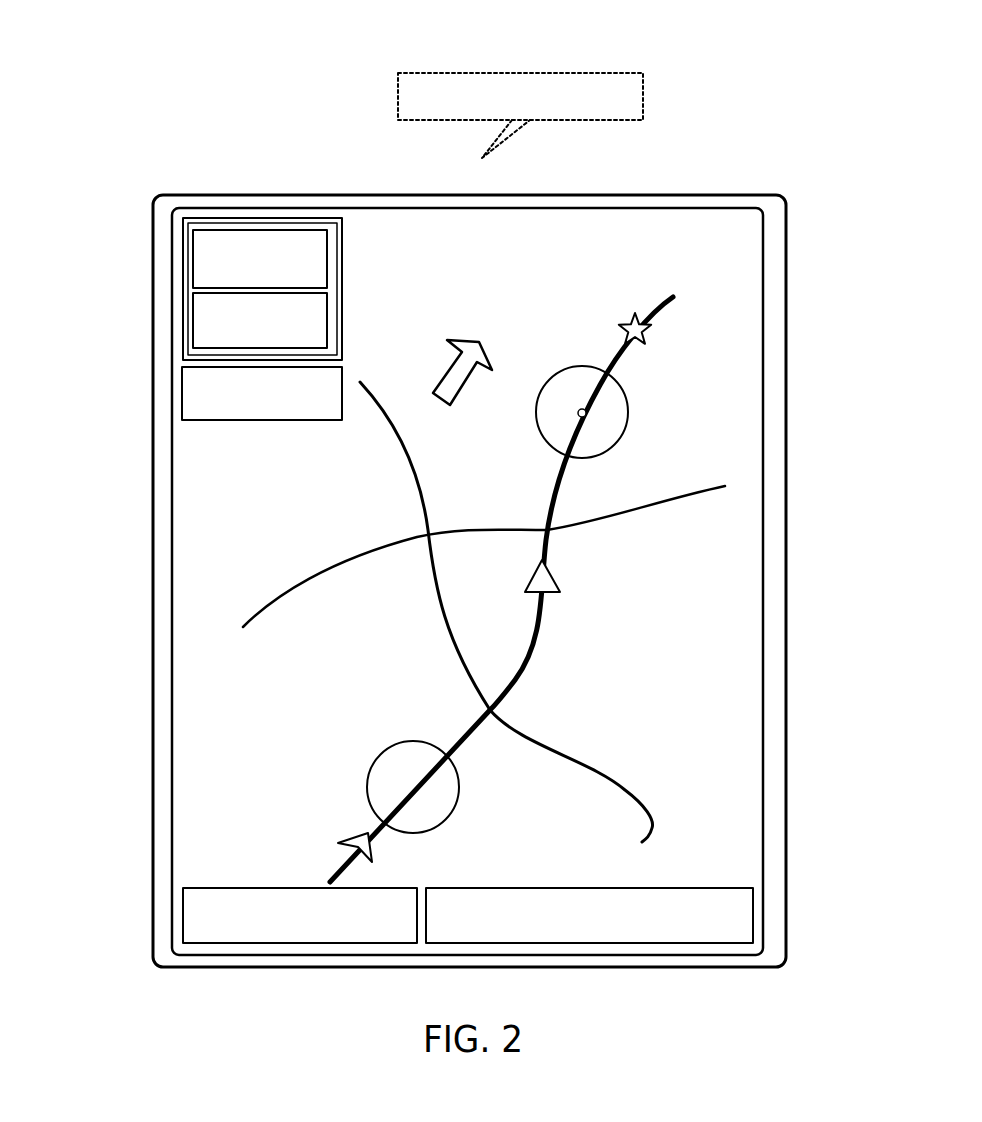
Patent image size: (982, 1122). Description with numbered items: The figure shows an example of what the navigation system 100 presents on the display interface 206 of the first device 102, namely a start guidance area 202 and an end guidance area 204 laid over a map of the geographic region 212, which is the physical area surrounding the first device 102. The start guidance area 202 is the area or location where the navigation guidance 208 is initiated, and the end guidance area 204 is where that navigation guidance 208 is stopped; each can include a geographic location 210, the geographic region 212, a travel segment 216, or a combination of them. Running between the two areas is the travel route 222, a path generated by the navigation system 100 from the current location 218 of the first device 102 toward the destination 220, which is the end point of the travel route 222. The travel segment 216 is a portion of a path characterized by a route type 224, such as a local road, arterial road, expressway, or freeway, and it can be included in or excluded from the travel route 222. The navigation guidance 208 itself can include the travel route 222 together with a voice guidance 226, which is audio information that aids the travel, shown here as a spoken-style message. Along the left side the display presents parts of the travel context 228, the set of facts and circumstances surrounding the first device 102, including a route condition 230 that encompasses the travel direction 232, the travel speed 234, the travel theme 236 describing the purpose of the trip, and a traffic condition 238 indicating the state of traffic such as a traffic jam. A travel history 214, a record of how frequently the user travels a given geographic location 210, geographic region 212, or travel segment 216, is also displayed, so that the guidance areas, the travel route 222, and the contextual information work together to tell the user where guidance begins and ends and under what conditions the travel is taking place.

The navigation system 100 is at (184, 64).
The first device 102 is at (189, 190).
The display interface 206 is at (385, 196).
The geographic region 212 is at (595, 232).
The travel segment 216 is at (284, 577).
The travel route 222 is at (523, 648).
The end guidance area 204 is at (645, 385).
The geographic location 210 is at (588, 412).
The destination 220 is at (632, 320).
The traffic condition 238 is at (557, 570).
The start guidance area 202 is at (383, 777).
The current location 218 is at (337, 840).
The travel direction 232 is at (467, 346).
The voice guidance 226 is at (501, 78).
The route condition 230 is at (176, 250).
The travel speed 234 is at (262, 241).
The travel theme 236 is at (203, 303).
The travel history 214 is at (207, 383).
The travel context 228 is at (202, 928).
The navigation guidance 208 is at (717, 882).
The route type 224 is at (732, 932).